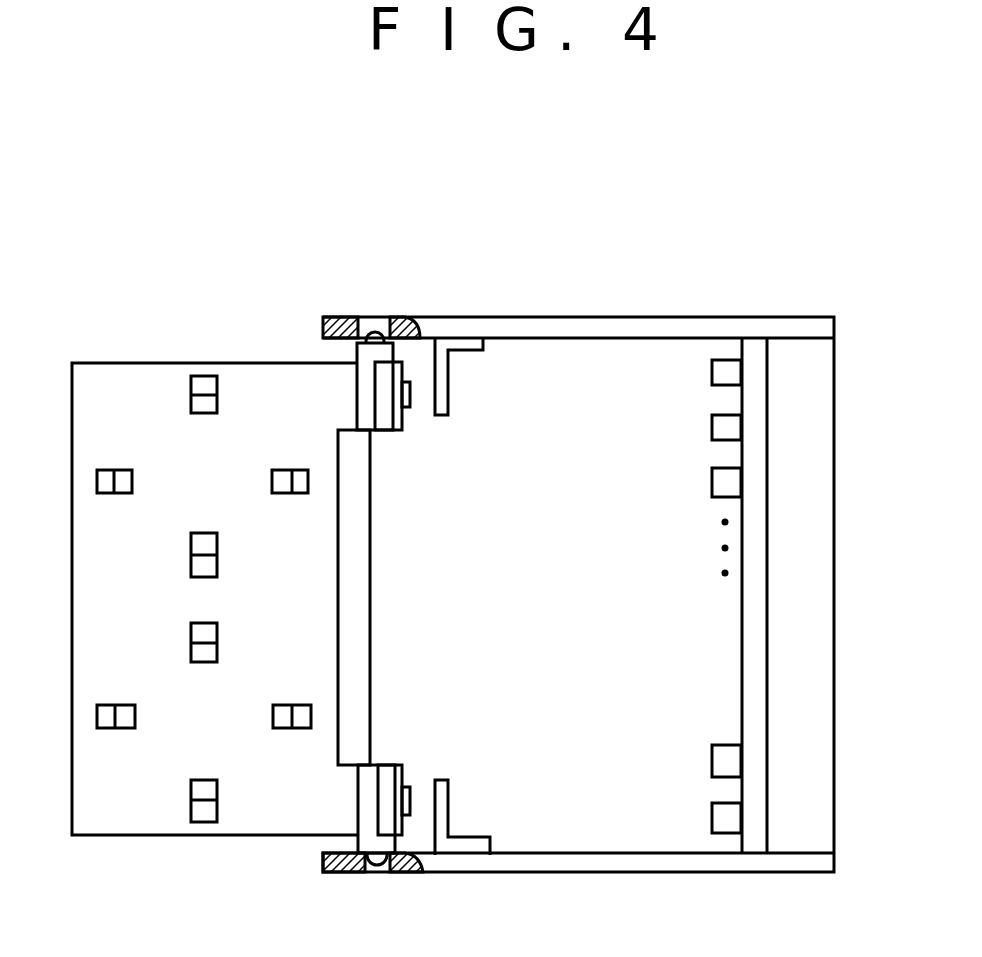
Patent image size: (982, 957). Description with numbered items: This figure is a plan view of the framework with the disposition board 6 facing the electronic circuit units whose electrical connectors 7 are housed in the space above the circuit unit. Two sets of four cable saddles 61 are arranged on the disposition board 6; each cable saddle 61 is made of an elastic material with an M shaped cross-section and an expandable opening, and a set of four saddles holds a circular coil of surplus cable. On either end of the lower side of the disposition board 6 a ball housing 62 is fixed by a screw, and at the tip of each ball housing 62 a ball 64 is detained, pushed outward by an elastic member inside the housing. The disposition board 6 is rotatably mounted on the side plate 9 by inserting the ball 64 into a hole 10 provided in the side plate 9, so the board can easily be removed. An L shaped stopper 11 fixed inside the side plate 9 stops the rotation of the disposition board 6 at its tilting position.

The disposition board 6 is at (120, 838).
The electrical connectors 7 is at (732, 373).
The side plate 9 is at (617, 317).
The through hole 10 is at (373, 870).
The L shaped stopper 11 is at (448, 797).
The cable saddle 61 is at (122, 468).
The ball housing 62 is at (367, 398).
The ball 64 is at (385, 870).